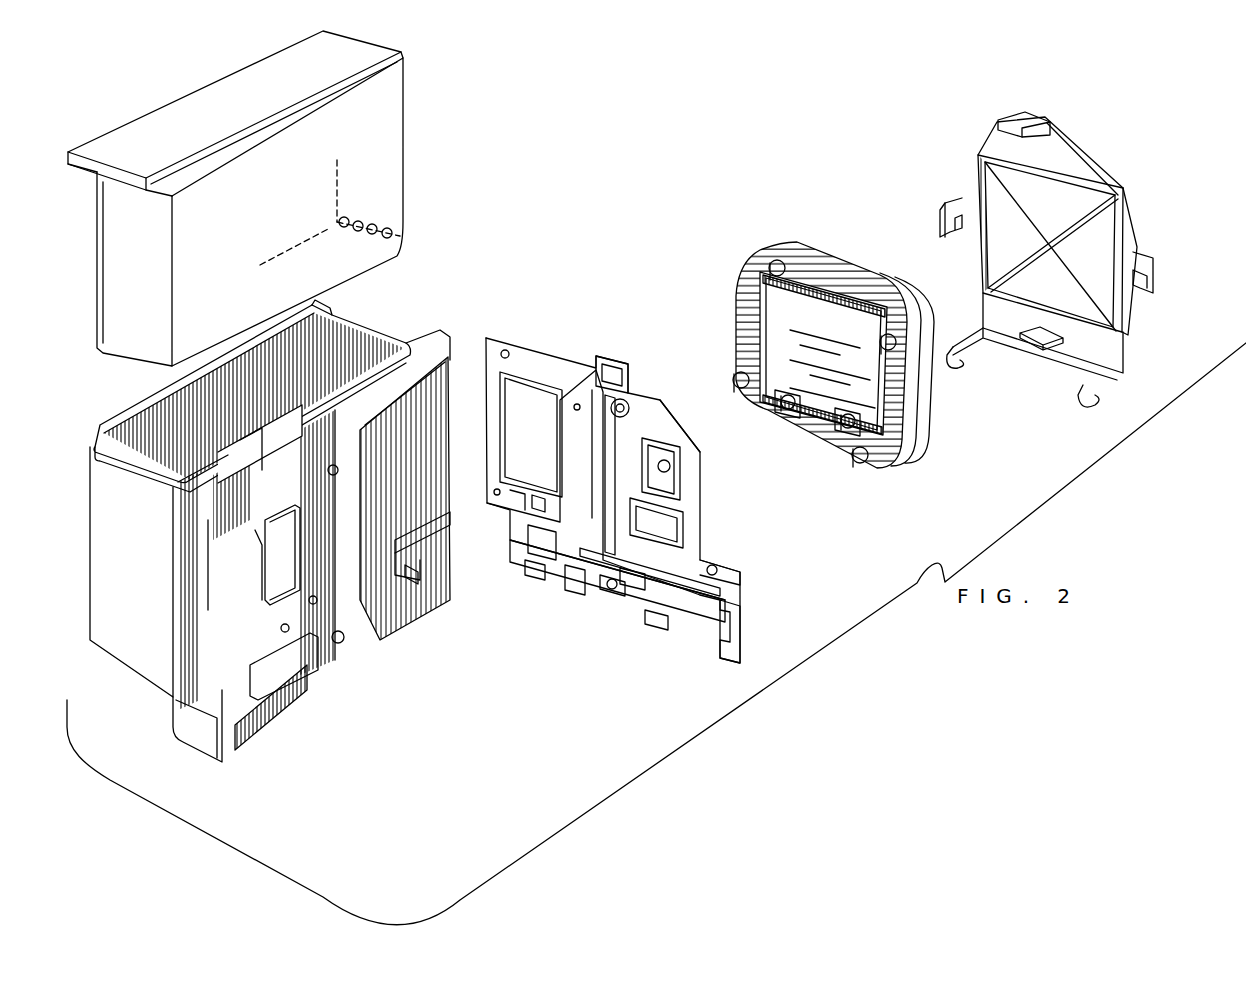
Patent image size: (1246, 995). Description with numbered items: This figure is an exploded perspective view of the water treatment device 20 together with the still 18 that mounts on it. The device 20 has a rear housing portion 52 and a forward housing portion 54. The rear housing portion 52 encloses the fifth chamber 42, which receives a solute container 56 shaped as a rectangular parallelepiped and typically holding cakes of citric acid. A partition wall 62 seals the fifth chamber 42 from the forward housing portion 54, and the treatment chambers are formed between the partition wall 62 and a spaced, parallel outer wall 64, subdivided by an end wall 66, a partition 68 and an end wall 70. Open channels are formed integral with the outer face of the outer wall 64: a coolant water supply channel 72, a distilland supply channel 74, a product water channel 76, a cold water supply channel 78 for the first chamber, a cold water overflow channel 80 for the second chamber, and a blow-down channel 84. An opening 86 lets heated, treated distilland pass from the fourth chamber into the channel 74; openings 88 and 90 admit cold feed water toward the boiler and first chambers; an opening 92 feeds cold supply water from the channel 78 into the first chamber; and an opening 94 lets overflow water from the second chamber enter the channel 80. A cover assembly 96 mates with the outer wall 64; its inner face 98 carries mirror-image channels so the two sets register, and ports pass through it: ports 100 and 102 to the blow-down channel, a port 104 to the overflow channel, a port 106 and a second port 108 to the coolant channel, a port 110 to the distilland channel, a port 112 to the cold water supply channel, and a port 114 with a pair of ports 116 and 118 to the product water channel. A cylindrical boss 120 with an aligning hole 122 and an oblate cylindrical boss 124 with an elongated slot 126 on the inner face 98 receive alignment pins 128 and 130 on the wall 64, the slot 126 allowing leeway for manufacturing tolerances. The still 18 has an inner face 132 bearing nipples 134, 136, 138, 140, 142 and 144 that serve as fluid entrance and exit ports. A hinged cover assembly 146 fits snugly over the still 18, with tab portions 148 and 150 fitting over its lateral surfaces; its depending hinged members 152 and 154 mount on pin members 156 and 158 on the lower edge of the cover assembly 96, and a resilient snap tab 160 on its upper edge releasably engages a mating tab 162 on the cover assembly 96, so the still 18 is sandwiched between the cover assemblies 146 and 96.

The still 18 is at (937, 427).
The water treatment device 20 is at (493, 640).
The fifth chamber 42 is at (392, 274).
The rear housing portion 52 is at (147, 643).
The forward housing portion 54 is at (197, 720).
The solute container 56 is at (412, 152).
The partition wall 62 is at (302, 410).
The outer wall 64 is at (422, 362).
The end wall 66 is at (227, 462).
The partition 68 is at (262, 425).
The end wall 70 is at (398, 337).
The coolant water supply channel 72 is at (437, 530).
The distilland supply channel 74 is at (397, 543).
The product water channel 76 is at (413, 407).
The cold water supply channel 78 is at (280, 530).
The cold water overflow channel 80 is at (250, 585).
The blow-down channel 84 is at (305, 655).
The opening 86 is at (420, 582).
The opening 88 is at (315, 607).
The opening 90 is at (285, 640).
The opening 92 is at (295, 530).
The opening 94 is at (263, 678).
The cover assembly 96 is at (548, 332).
The inner face 98 is at (627, 400).
The port 100 is at (623, 590).
The port 102 is at (735, 643).
The port 104 is at (714, 568).
The port 106 is at (537, 503).
The second port 108 is at (492, 490).
The port 110 is at (578, 403).
The port 112 is at (670, 467).
The port 114 is at (504, 352).
The port 116 is at (575, 575).
The port 118 is at (608, 590).
The cylindrical boss 120 is at (632, 402).
The cylindrical aligning hole 122 is at (652, 416).
The oblate cylindrical boss 124 is at (615, 575).
The elongated slot 126 is at (617, 503).
The alignment pin 128 is at (333, 465).
The alignment pin 130 is at (345, 640).
The inner face 132 is at (813, 297).
The nipple 134 is at (862, 458).
The nipple 136 is at (846, 425).
The nipple 138 is at (770, 410).
The nipple 140 is at (735, 381).
The nipple 142 is at (893, 335).
The nipple 144 is at (773, 265).
The hinged cover assembly 146 is at (1104, 147).
The tab portion 148 is at (1152, 280).
The tab portion 150 is at (942, 200).
The hinged member 152 is at (1080, 390).
The hinged member 154 is at (952, 350).
The pin member 156 is at (657, 625).
The pin member 158 is at (533, 567).
The resilient snap tab 160 is at (1010, 117).
The mating tab 162 is at (627, 358).